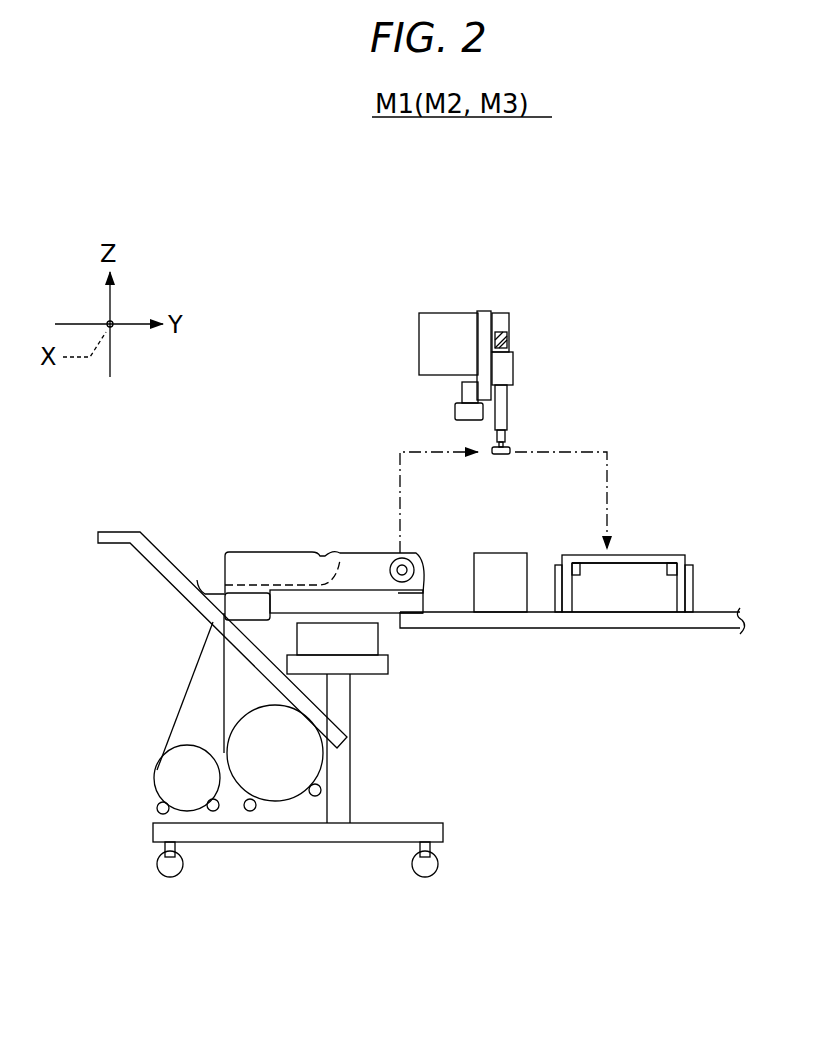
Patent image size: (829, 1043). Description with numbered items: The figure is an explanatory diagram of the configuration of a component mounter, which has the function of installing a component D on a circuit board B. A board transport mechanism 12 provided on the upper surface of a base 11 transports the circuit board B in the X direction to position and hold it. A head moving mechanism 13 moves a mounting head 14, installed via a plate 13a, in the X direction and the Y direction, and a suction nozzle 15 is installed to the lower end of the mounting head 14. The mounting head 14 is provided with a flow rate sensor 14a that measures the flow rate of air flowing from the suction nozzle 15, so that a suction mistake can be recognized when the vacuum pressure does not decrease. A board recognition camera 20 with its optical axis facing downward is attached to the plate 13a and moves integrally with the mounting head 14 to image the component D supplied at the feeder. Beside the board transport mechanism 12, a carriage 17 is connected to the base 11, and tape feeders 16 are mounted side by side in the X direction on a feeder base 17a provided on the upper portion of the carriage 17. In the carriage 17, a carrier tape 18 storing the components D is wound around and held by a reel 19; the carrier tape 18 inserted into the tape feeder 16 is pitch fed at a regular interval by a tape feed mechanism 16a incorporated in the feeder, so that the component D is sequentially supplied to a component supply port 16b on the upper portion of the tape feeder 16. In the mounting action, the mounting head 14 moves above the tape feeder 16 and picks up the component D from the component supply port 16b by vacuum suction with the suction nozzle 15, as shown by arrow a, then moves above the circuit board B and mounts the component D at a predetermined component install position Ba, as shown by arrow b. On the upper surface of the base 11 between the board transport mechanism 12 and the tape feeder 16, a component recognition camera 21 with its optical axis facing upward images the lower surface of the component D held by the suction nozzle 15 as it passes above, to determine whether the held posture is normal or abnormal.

The base 11 is at (713, 623).
The board transport mechanism 12 is at (685, 593).
The head moving mechanism 13 is at (445, 330).
The plate 13a is at (485, 318).
The mounting head 14 is at (518, 300).
The flow rate sensor 14a is at (506, 337).
The suction nozzle 15 is at (506, 441).
The tape feeder 16 is at (250, 567).
The tape feed mechanism 16a is at (412, 596).
The component supply port 16b is at (392, 550).
The carriage 17 is at (438, 757).
The feeder base 17a is at (297, 600).
The carrier tape 18 is at (223, 710).
The reel 19 is at (172, 777).
The board recognition camera 20 is at (463, 410).
The component recognition camera 21 is at (503, 597).
The circuit board B is at (664, 558).
The component install position Ba is at (618, 550).
The component D is at (510, 453).
The arrow a is at (398, 462).
The arrow b is at (608, 462).